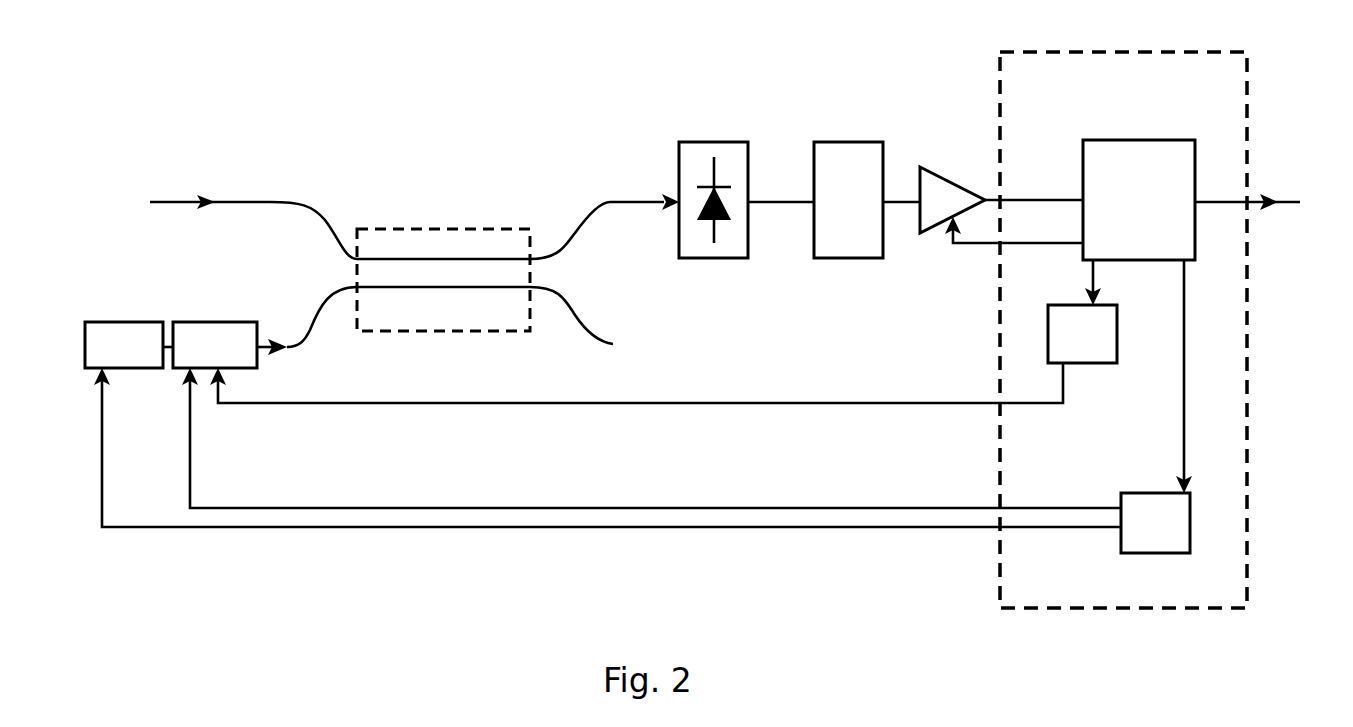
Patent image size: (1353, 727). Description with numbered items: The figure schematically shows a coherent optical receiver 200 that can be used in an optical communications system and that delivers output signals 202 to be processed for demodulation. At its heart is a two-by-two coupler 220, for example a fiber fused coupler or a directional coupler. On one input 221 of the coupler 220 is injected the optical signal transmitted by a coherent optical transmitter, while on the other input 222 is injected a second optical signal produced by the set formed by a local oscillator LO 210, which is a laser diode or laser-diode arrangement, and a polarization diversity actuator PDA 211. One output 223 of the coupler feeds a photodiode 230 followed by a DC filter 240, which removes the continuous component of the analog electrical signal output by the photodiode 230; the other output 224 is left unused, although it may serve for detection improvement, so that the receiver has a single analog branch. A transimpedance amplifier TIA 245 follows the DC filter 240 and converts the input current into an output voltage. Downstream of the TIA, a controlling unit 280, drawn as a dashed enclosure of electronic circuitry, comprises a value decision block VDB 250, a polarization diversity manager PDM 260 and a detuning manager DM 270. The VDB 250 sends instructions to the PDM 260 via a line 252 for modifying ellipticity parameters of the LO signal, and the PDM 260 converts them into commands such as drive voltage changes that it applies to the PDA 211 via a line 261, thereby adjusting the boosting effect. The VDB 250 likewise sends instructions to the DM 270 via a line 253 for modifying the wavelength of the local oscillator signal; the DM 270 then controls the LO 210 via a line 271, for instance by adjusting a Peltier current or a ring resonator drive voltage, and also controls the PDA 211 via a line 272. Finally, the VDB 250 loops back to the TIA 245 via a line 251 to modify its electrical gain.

The coherent optical receiver 200 is at (578, 113).
The output signals 202 is at (1278, 196).
The local oscillator LO 210 is at (122, 322).
The polarization diversity actuator PDA 211 is at (226, 322).
The 2×2 coupler 220 is at (447, 229).
The input of the 2×2 coupler 221 is at (312, 218).
The other input of the 2×2 coupler 222 is at (310, 331).
The output of the 2×2 coupler 223 is at (576, 234).
The other output of the 2×2 coupler 224 is at (583, 337).
The photodiode 230 is at (727, 259).
The DC filter 240 is at (850, 259).
The transimpedance amplifier TIA 245 is at (942, 167).
The value decision block VDB 250 is at (1110, 140).
The line 251 is at (975, 244).
The line 252 is at (1095, 266).
The line 253 is at (1185, 325).
The polarization diversity manager PDM 260 is at (1117, 357).
The line 261 is at (732, 403).
The detuning manager DM 270 is at (1121, 552).
The line 271 is at (732, 527).
The line 272 is at (794, 508).
The controlling unit 280 is at (1000, 97).